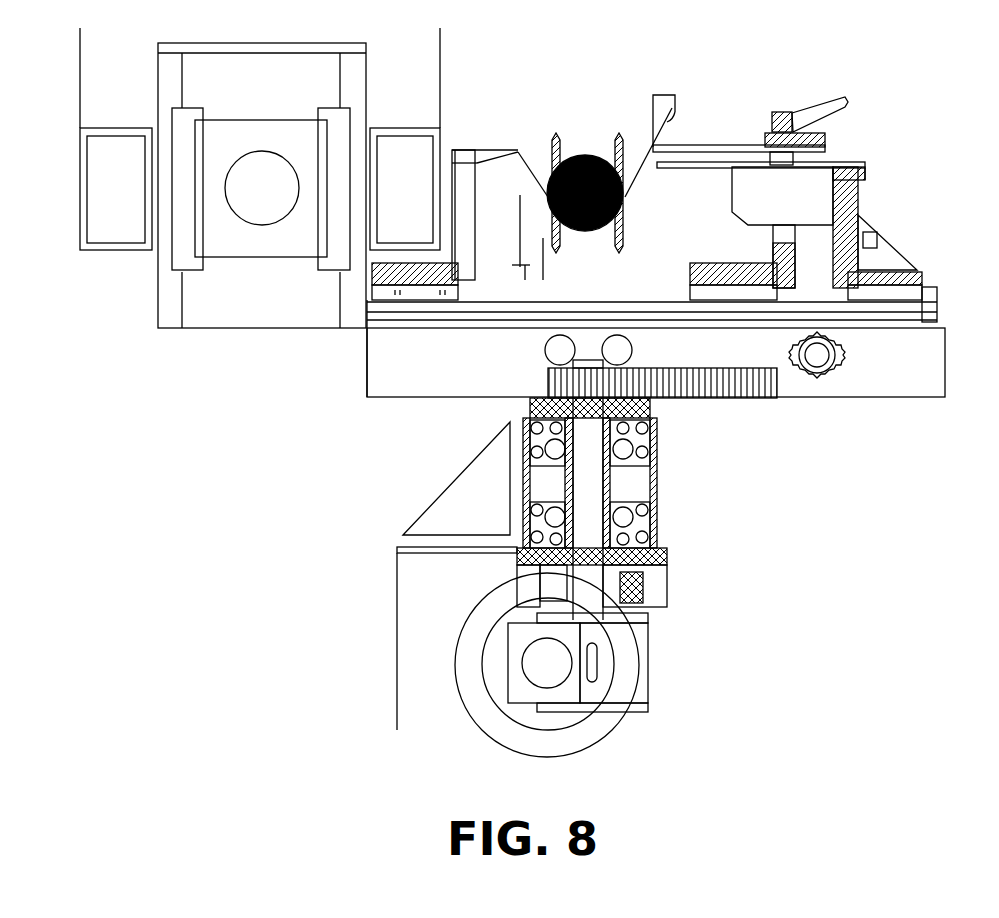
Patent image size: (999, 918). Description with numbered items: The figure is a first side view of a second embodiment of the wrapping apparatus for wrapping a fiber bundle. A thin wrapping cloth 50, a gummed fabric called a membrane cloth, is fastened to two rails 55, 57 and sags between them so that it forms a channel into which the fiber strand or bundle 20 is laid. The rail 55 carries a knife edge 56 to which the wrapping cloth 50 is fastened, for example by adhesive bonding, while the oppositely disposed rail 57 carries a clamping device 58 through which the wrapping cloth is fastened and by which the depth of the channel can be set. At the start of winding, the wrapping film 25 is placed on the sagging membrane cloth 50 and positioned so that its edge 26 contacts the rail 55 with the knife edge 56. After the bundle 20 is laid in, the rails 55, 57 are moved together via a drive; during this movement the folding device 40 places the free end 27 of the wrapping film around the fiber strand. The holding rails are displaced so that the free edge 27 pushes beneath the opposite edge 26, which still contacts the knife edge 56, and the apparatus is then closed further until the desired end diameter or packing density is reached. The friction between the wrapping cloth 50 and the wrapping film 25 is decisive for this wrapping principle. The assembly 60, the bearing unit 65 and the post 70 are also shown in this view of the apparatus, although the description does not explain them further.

The bundle 20 is at (585, 155).
The wrapping film 25 is at (675, 118).
The edge of the wrapping film 26 is at (520, 150).
The free end of the wrapping film 27 is at (672, 90).
The folding device 40 is at (697, 168).
The wrapping cloth 50 is at (635, 183).
The rail 55 is at (478, 148).
The knife edge 56 is at (512, 163).
The rail 57 is at (718, 147).
The clamping device 58 is at (778, 110).
The assembly 60 is at (881, 152).
The bearing assembly 65 is at (657, 503).
The post 70 is at (780, 275).